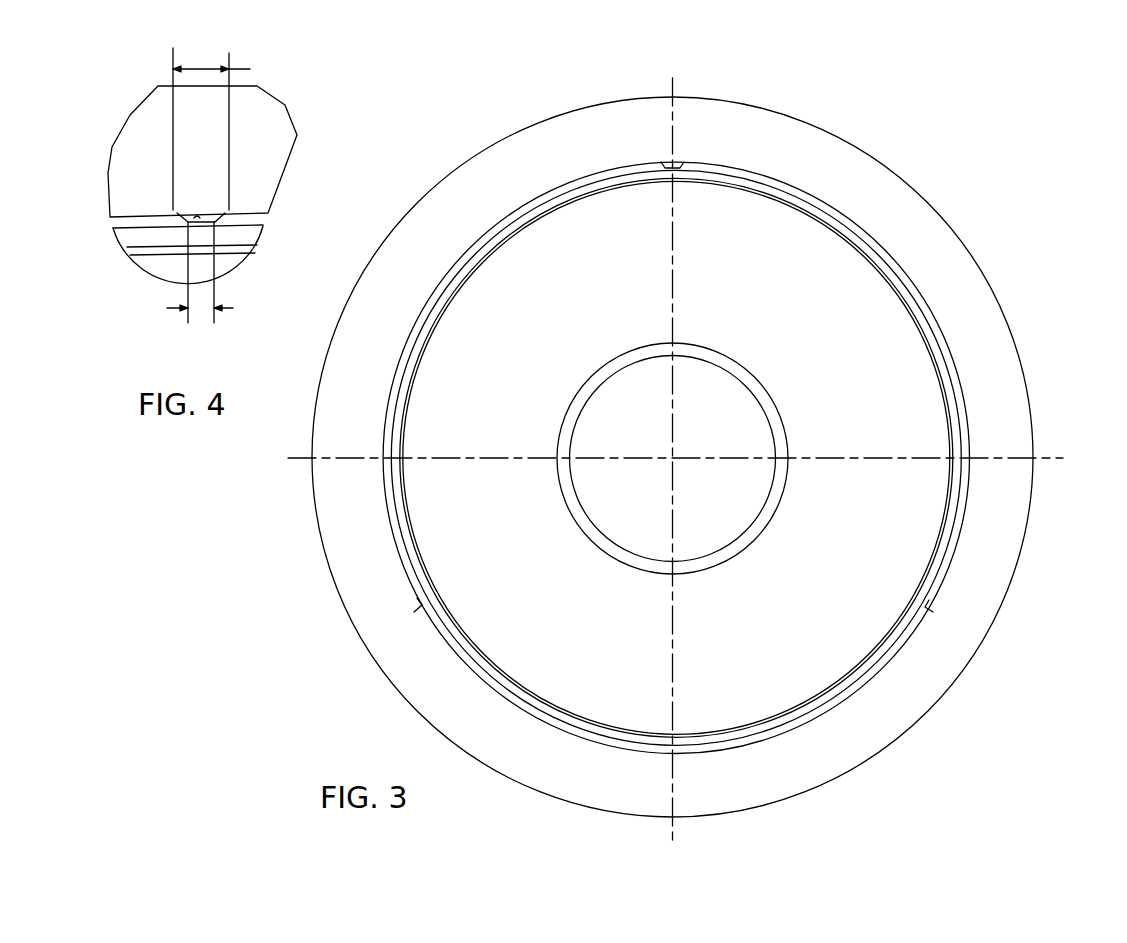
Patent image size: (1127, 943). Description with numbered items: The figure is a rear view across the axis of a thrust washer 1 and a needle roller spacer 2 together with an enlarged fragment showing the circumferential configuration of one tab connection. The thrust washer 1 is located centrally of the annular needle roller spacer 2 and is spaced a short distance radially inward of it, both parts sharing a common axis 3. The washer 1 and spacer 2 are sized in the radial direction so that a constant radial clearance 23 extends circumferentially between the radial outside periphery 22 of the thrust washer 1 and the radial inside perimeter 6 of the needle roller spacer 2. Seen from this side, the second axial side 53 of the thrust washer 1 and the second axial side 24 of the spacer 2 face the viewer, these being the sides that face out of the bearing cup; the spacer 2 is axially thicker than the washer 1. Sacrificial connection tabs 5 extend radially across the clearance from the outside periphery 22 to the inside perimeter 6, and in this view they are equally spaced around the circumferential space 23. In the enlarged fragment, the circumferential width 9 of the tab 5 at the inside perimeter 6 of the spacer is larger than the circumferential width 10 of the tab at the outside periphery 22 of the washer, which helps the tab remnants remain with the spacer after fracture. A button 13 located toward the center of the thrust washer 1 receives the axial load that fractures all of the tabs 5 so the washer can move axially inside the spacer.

In FIG. 3, the thrust washer 1 is at (805, 338).
In FIG. 4, the thrust washer 1 is at (243, 268).
In FIG. 3, the needle roller spacer 2 is at (774, 156).
In FIG. 4, the needle roller spacer 2 is at (277, 127).
In FIG. 3, the common axis 3 is at (1035, 458).
In FIG. 3, the sacrificial connection tabs 5 is at (672, 163).
In FIG. 4, the sacrificial connection tabs 5 is at (197, 217).
In FIG. 3, the radial inside perimeter of the needle roller spacer 6 is at (902, 647).
In FIG. 4, the radial inside perimeter of the needle roller spacer 6 is at (145, 215).
In FIG. 4, the circumferential width of the sacrificial tab at the inside perimeter of the spac 9 is at (224, 129).
In FIG. 4, the circumferential width of the tab at the outside periphery of the thrust washer 10 is at (218, 272).
In FIG. 3, the button 13 is at (740, 507).
In FIG. 3, the radial outside periphery of the thrust washer 22 is at (551, 193).
In FIG. 4, the radial outside periphery of the thrust washer 22 is at (140, 230).
In FIG. 3, the constant radial clearance 23 is at (952, 353).
In FIG. 4, the constant radial clearance 23 is at (122, 225).
In FIG. 3, the second axial side of the spacer 24 is at (482, 190).
In FIG. 3, the second axial side of the thrust washer 53 is at (500, 288).